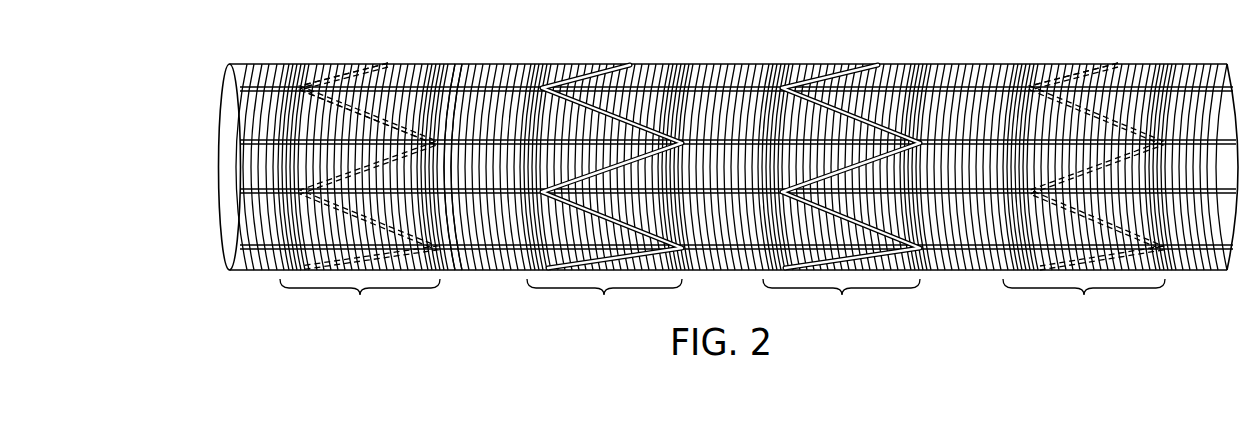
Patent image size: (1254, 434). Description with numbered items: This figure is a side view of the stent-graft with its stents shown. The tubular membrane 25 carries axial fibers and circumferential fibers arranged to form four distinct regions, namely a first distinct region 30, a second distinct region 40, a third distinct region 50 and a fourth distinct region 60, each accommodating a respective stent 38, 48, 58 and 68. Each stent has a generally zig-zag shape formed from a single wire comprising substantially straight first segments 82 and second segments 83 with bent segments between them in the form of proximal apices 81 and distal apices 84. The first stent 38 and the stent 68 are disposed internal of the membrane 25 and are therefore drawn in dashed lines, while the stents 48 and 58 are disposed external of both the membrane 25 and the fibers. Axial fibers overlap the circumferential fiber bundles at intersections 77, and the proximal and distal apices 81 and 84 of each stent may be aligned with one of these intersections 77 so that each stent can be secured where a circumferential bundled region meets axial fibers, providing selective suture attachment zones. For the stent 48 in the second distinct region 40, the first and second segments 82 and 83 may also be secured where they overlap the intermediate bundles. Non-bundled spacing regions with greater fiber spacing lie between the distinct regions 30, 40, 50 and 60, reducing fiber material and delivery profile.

The membrane 25 is at (240, 87).
The first distinct region 30 is at (360, 192).
The first stent 38 is at (387, 110).
The second distinct region 40 is at (604, 300).
The stent 48 is at (592, 68).
The third distinct region 50 is at (841, 300).
The stent 58 is at (828, 66).
The fourth distinct region 60 is at (1084, 192).
The stent 68 is at (1063, 67).
The intersections 77 is at (1172, 249).
The proximal apices 81 is at (300, 86).
The first segments 82 is at (343, 61).
The second segments 83 is at (422, 63).
The distal apices 84 is at (463, 78).